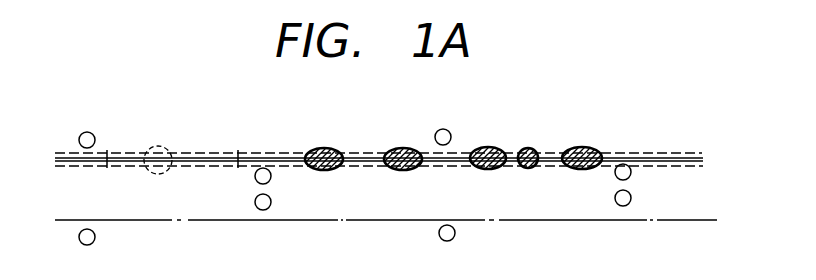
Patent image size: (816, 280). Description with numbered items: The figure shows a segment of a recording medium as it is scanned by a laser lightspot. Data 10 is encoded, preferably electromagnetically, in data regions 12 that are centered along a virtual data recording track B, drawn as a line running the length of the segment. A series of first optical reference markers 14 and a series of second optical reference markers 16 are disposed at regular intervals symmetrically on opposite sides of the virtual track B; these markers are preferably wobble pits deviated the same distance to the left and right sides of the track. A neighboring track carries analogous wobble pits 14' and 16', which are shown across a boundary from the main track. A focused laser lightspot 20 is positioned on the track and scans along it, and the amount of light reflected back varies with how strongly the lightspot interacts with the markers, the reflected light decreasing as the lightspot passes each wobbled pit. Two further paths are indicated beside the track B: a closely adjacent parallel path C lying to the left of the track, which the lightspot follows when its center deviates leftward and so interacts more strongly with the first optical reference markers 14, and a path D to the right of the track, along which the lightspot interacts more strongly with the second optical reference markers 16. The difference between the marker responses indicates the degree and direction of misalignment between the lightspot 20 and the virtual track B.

The data 10 is at (385, 150).
The data regions 12 is at (235, 175).
The first optical reference markers 14 is at (287, 124).
The wobble pits of adjacent track 14' is at (293, 243).
The second optical reference markers 16 is at (443, 178).
The wobble pits of adjacent track 16' is at (443, 201).
The focused laser lightspot 20 is at (163, 147).
The virtual data recording track B is at (707, 152).
The closely adjacent parallel path C is at (605, 150).
The path to the right of the virtual track D is at (682, 162).